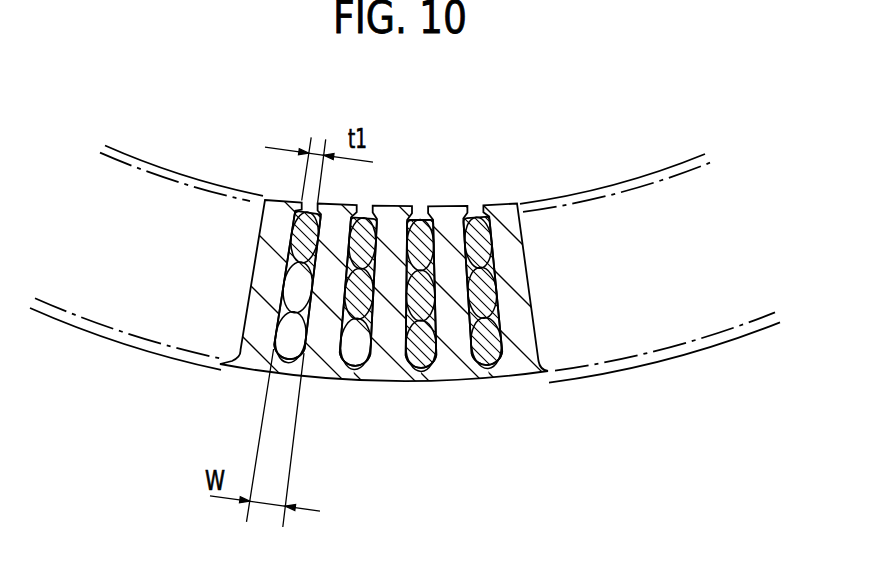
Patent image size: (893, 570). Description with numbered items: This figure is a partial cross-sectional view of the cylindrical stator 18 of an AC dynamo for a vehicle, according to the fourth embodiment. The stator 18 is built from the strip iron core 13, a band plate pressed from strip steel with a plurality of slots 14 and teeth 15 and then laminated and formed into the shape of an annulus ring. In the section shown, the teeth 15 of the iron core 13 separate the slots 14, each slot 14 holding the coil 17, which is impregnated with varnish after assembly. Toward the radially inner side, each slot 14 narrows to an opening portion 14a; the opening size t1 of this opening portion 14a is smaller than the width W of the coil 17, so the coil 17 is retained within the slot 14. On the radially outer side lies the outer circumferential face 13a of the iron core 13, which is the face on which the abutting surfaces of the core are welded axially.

The strip iron core 13 is at (330, 383).
The outer circumferential face 13a is at (538, 382).
The slot 14 is at (484, 362).
The opening portion 14a is at (422, 214).
The tooth 15 is at (452, 357).
The coil 17 is at (517, 227).
The cylindrical stator 18 is at (397, 396).